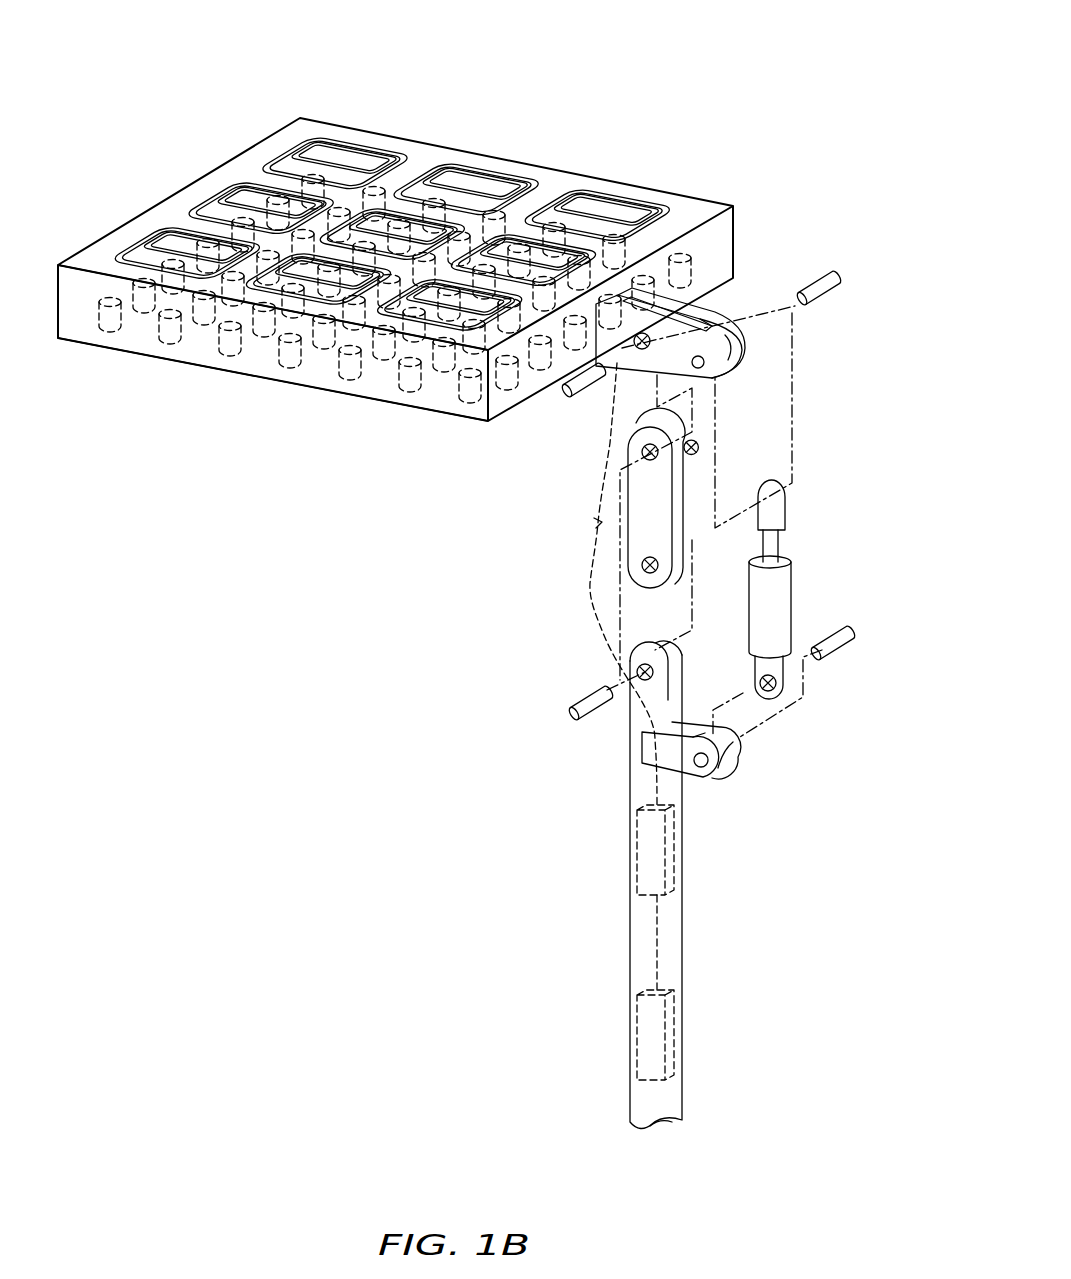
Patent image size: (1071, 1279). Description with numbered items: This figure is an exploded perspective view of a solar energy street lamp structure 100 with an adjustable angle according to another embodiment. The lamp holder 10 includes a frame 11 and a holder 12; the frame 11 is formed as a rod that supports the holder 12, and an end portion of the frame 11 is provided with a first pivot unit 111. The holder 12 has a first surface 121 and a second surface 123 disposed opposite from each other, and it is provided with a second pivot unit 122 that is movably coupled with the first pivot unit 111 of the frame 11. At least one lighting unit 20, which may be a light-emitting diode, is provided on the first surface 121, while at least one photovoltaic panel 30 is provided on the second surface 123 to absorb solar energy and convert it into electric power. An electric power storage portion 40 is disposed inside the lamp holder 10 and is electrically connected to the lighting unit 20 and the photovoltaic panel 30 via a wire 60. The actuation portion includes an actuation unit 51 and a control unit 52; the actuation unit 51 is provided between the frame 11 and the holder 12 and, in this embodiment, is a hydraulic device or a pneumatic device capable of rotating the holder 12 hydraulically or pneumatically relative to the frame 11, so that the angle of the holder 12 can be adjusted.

The solar energy street lamp structure 100 is at (794, 38).
The lamp holder 10 is at (675, 885).
The frame 11 is at (672, 938).
The first pivot unit 111 is at (675, 670).
The holder 12 is at (722, 227).
The first surface 121 is at (289, 382).
The second pivot unit 122 is at (705, 318).
The second surface 123 is at (568, 190).
The lighting unit 20 is at (168, 338).
The photovoltaic panel 30 is at (360, 165).
The electric power storage portion 40 is at (645, 1033).
The actuation unit 51 is at (636, 497).
The control unit 52 is at (645, 855).
The wire 60 is at (578, 597).